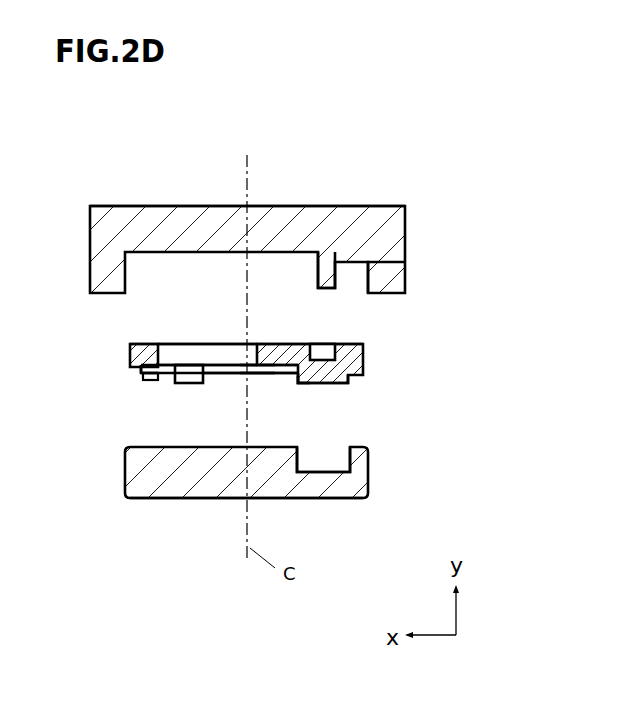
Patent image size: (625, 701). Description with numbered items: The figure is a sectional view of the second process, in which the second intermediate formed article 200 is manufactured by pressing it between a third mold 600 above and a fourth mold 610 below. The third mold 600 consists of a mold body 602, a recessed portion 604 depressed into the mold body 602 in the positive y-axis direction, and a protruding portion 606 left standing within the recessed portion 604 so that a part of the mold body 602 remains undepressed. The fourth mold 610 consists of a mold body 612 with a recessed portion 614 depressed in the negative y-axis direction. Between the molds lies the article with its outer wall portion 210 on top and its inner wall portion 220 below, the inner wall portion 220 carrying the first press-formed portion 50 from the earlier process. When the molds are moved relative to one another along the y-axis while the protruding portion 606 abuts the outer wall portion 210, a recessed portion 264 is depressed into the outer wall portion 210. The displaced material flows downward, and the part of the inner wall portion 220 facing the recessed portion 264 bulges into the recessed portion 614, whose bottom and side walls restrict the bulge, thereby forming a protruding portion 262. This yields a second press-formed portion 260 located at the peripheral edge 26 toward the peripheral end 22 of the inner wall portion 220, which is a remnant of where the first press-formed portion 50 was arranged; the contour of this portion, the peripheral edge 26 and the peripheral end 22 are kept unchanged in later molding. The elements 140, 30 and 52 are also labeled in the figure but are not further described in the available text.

The third mold 600 is at (274, 205).
The mold body 602 is at (315, 206).
The recessed portion 604 is at (368, 263).
The protruding portion 606 is at (320, 262).
The second intermediate formed article 200 is at (252, 364).
The outer wall portion 210 is at (272, 336).
The recessed portion 264 is at (320, 353).
The internal space 140 is at (177, 356).
The side wall member 30 is at (111, 357).
The peripheral end 22 is at (365, 378).
The peripheral edge 26 is at (136, 377).
The protruding portion 262 is at (160, 386).
The second press-formed portion 260 is at (367, 391).
The first press-formed portion 50 is at (232, 394).
The wiring layer 52 is at (253, 375).
The inner wall portion 220 is at (209, 395).
The fourth mold 610 is at (302, 485).
The recessed portion 614 is at (338, 447).
The mold body 612 is at (175, 498).